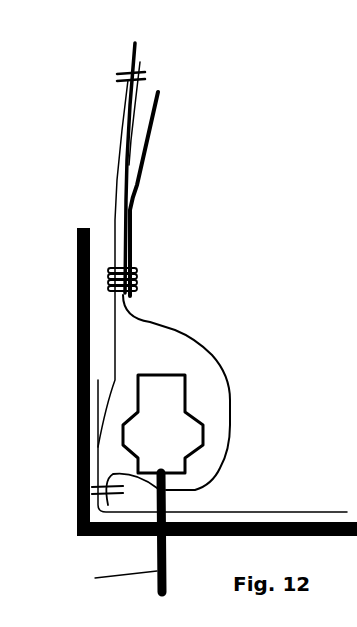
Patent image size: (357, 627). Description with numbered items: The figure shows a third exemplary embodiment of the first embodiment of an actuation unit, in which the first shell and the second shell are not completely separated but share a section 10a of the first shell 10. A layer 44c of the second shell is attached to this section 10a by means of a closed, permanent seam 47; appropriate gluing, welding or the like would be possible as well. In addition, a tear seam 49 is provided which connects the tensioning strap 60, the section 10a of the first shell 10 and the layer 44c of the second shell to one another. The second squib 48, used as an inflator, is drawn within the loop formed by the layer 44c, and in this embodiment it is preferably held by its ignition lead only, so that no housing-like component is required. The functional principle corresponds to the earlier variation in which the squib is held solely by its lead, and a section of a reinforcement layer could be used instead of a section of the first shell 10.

The first shell 10 is at (133, 52).
The section of the first shell 10a is at (122, 127).
The closed, permanent seam 47 is at (148, 75).
The tear seam 49 is at (138, 278).
The tensioning strap 60 is at (145, 155).
The layer of the second shell 44c is at (193, 340).
The second squib 48 is at (168, 442).